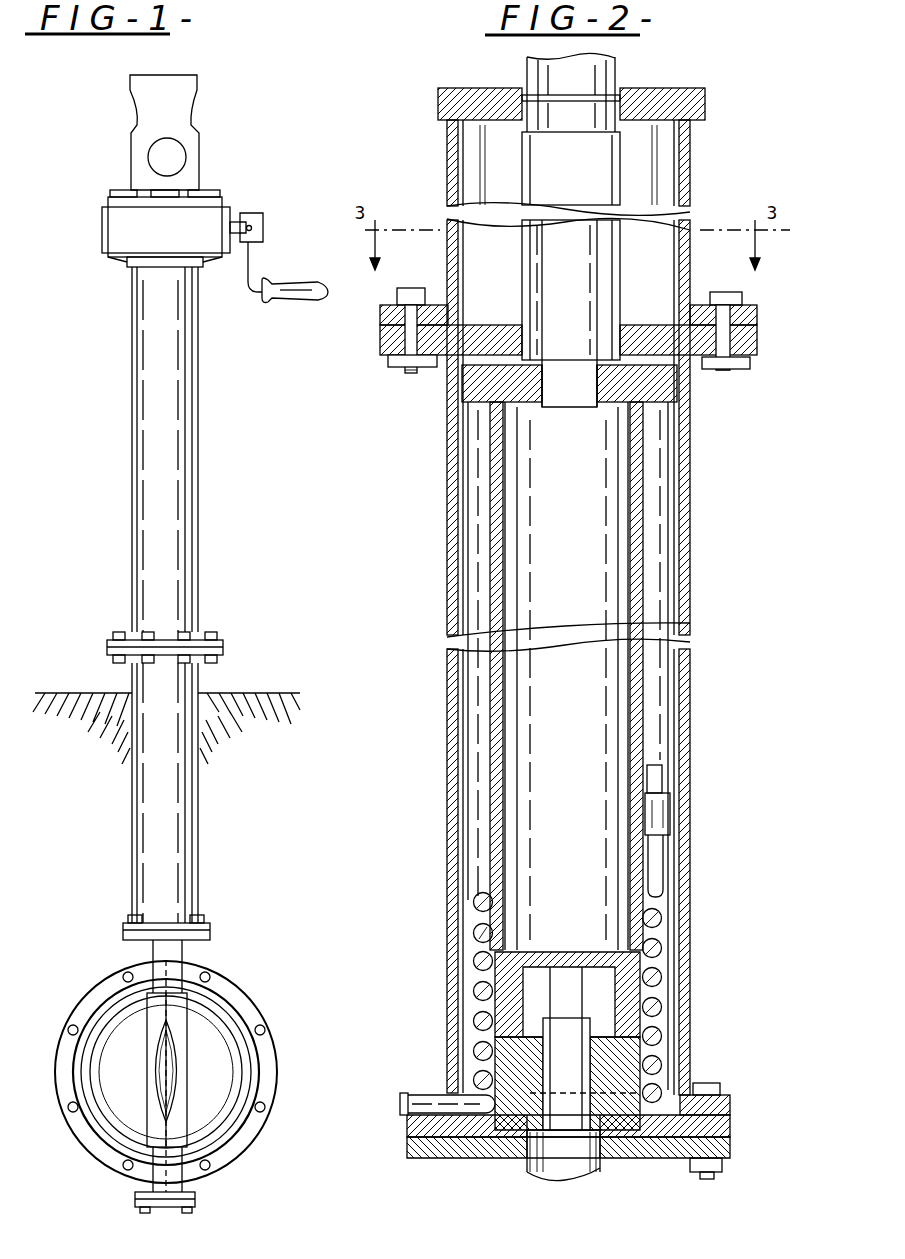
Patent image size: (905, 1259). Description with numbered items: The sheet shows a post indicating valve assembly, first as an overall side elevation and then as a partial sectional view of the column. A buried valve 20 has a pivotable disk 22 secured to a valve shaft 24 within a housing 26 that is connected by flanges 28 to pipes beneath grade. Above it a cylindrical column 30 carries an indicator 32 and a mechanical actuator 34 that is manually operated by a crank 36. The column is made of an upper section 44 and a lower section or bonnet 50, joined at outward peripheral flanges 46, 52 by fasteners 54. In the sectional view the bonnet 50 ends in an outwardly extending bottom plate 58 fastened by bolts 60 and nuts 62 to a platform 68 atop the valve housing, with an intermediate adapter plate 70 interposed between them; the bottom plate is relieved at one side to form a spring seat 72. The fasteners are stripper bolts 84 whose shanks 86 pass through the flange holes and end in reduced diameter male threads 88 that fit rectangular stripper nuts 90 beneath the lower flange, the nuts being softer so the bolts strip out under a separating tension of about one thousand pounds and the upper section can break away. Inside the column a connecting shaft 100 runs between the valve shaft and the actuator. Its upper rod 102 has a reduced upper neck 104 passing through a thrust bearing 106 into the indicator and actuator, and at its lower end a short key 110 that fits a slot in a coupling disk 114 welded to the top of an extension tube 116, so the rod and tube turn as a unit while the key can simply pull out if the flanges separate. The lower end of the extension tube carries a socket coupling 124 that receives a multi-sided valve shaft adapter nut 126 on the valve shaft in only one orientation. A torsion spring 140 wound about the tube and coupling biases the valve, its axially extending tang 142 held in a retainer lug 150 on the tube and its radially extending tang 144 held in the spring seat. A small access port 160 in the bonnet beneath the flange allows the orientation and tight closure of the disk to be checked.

In FIG. 1, the buried valve 20 is at (153, 1059).
In FIG. 1, the pivotable disk 22 is at (150, 1066).
In FIG. 1, the valve shaft 24 is at (148, 1122).
In FIG. 2, the valve shaft 24 is at (527, 1165).
In FIG. 1, the valve housing 26 is at (228, 1008).
In FIG. 1, the flanges 28 is at (74, 990).
In FIG. 1, the cylindrical column 30 is at (130, 577).
In FIG. 1, the indicator 32 is at (130, 100).
In FIG. 1, the mechanical actuator 34 is at (104, 252).
In FIG. 1, the crank 36 is at (280, 302).
In FIG. 1, the upper section 44 is at (199, 497).
In FIG. 2, the upper section 44 is at (691, 157).
In FIG. 1, the flange 46 is at (224, 641).
In FIG. 2, the flange 46 is at (757, 316).
In FIG. 1, the bonnet 50 is at (199, 782).
In FIG. 2, the bonnet 50 is at (447, 777).
In FIG. 1, the peripheral flange 52 is at (108, 652).
In FIG. 2, the peripheral flange 52 is at (380, 338).
In FIG. 1, the fasteners 54 is at (218, 665).
In FIG. 2, the bottom plate 58 is at (731, 1102).
In FIG. 2, the bolts 60 is at (713, 1083).
In FIG. 2, the nuts 62 is at (724, 1166).
In FIG. 2, the platform 68 is at (407, 1152).
In FIG. 2, the intermediate adapter plate 70 is at (407, 1130).
In FIG. 2, the spring seat 72 is at (412, 1097).
In FIG. 2, the stripper bolts 84 is at (740, 294).
In FIG. 2, the shanks 86 is at (410, 318).
In FIG. 2, the male threads 88 is at (405, 370).
In FIG. 2, the stripper nuts 90 is at (745, 370).
In FIG. 2, the connecting shaft 100 is at (522, 280).
In FIG. 2, the upper rod 102 is at (551, 167).
In FIG. 2, the upper neck 104 is at (527, 70).
In FIG. 2, the thrust bearing 106 is at (624, 98).
In FIG. 2, the key 110 is at (560, 408).
In FIG. 2, the coupling disk 114 is at (668, 392).
In FIG. 2, the extension tube 116 is at (644, 586).
In FIG. 2, the socket coupling 124 is at (641, 1020).
In FIG. 2, the valve shaft adapter nut 126 is at (497, 1057).
In FIG. 2, the torsion spring 140 is at (662, 918).
In FIG. 2, the axially extending spring tang 142 is at (664, 850).
In FIG. 2, the radially extending spring tang 144 is at (401, 1102).
In FIG. 2, the retainer lug 150 is at (671, 807).
In FIG. 2, the access port 160 is at (460, 376).